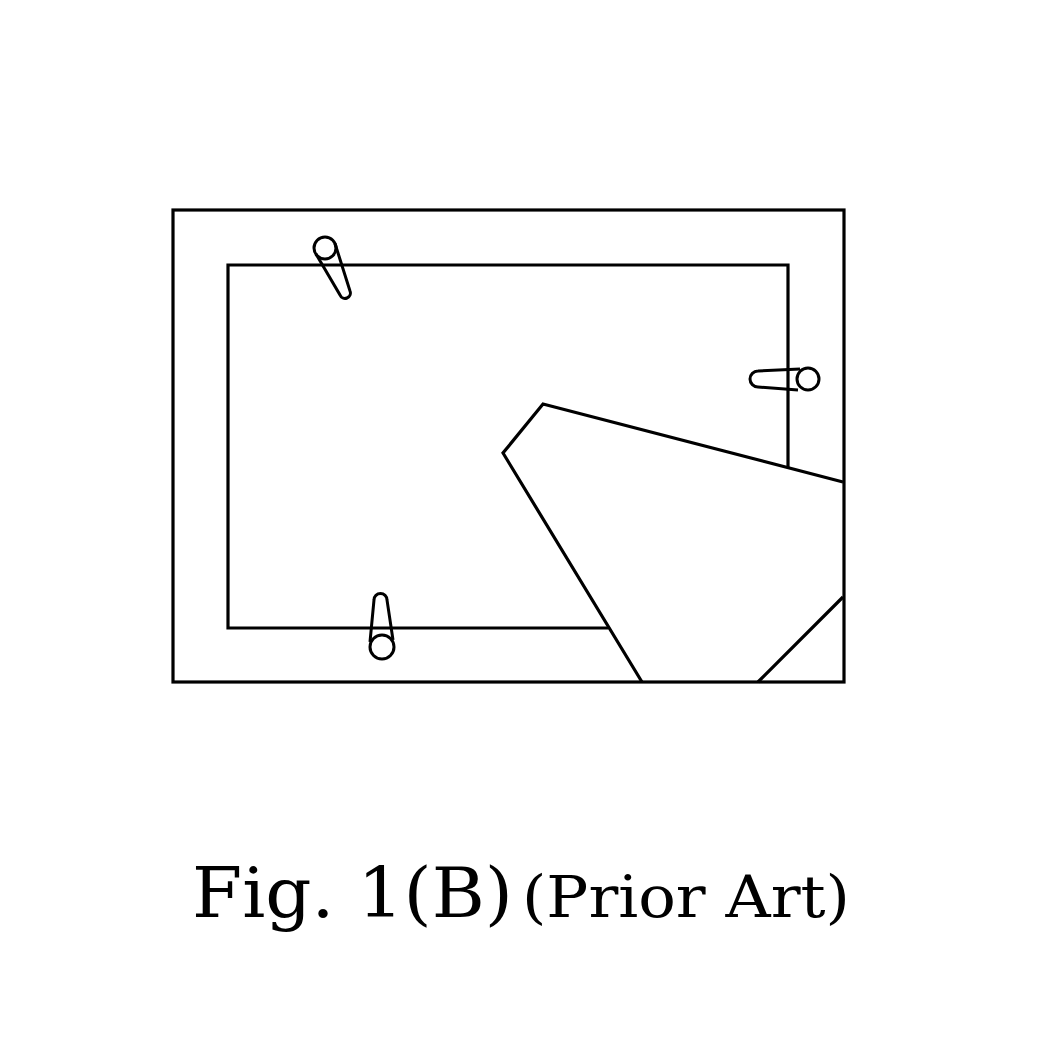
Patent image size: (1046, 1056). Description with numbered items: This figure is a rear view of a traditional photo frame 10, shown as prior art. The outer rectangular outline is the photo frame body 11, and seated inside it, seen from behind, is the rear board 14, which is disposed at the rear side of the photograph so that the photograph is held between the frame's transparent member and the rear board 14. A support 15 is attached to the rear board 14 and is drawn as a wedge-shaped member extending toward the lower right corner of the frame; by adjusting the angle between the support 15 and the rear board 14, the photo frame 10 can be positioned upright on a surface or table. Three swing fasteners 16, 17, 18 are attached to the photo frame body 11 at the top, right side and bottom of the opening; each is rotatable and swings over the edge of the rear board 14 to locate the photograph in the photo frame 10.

The photo frame 10 is at (243, 49).
The photo frame body 11 is at (172, 305).
The rear board 14 is at (265, 462).
The support 15 is at (823, 530).
The swing fastener 16 is at (330, 245).
The swing fastener 17 is at (810, 378).
The swing fastener 18 is at (380, 632).